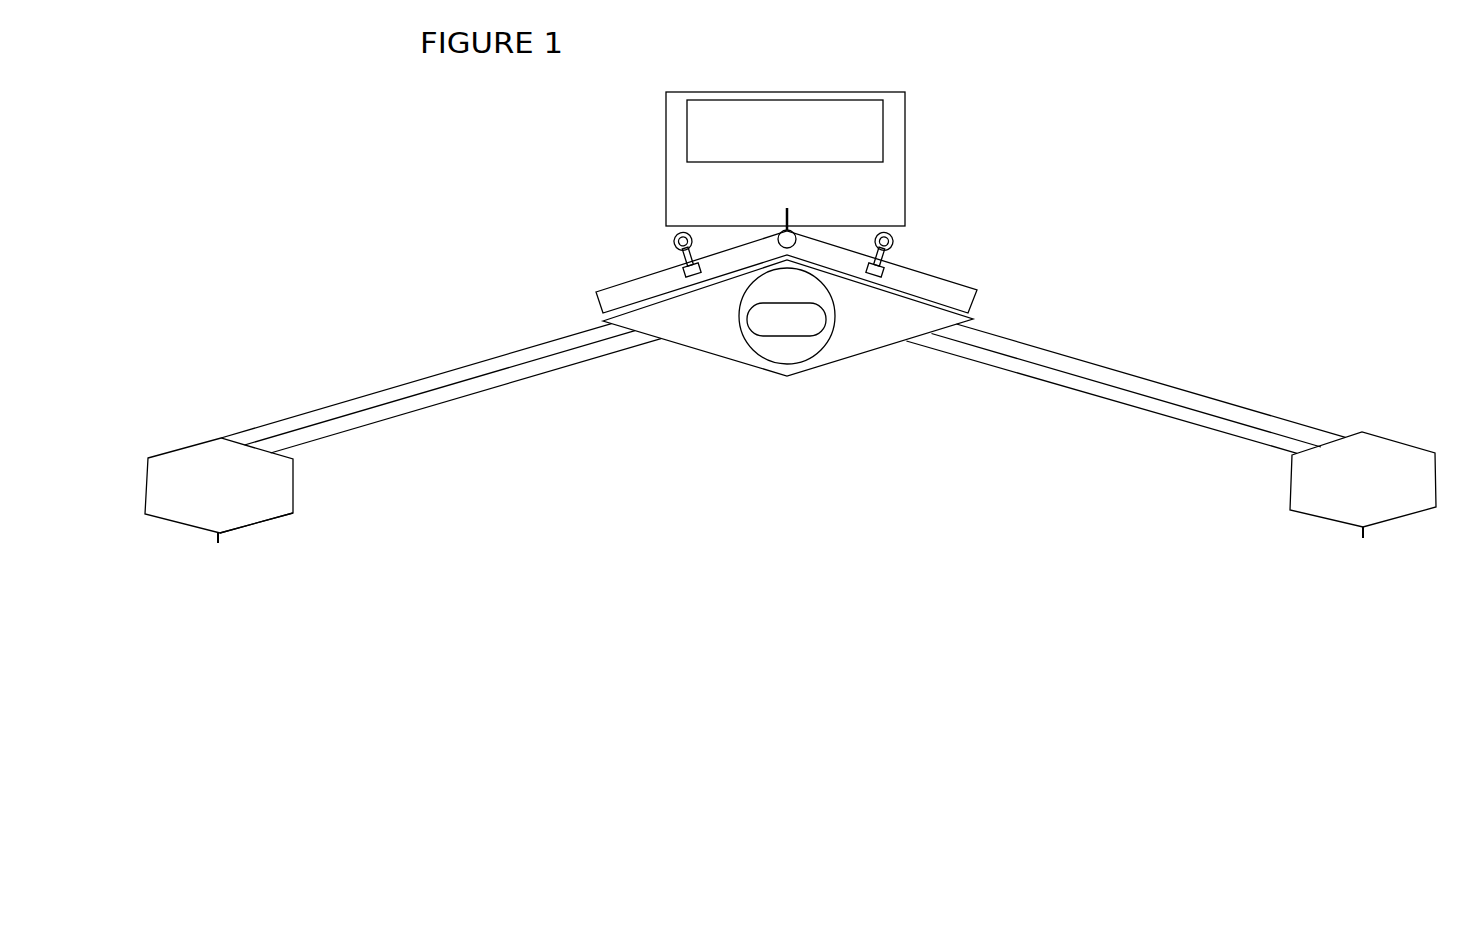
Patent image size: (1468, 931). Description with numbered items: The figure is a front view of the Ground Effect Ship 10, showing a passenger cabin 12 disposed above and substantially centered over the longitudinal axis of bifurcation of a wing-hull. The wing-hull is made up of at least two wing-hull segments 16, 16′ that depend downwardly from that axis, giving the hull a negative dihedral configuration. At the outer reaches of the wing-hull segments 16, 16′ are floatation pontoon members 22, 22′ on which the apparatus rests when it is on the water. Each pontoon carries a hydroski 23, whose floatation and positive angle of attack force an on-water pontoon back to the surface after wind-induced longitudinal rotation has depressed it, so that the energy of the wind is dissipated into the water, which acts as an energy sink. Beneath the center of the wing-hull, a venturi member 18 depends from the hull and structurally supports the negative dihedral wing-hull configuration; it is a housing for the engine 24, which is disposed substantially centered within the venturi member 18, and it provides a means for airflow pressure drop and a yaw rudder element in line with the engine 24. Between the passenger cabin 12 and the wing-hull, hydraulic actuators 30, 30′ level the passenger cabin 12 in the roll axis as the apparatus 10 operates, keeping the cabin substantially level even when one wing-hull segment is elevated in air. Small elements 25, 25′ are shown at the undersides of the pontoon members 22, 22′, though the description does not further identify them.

The Ground Effect Ship 10 is at (432, 207).
The passenger cabin 12 is at (907, 143).
The wing-hull segment 16 is at (474, 365).
The wing-hull segment 16′ is at (1121, 368).
The venturi member 18 is at (718, 360).
The pontoon member 22 is at (294, 488).
The pontoon member 22′ is at (1296, 509).
The pontoon hydroski 23 is at (264, 523).
The engine 24 is at (815, 338).
The left contact pin 25 is at (223, 545).
The right contact pin 25′ is at (1368, 543).
The hydraulic actuator 30 is at (674, 239).
The hydraulic actuator 30′ is at (895, 242).